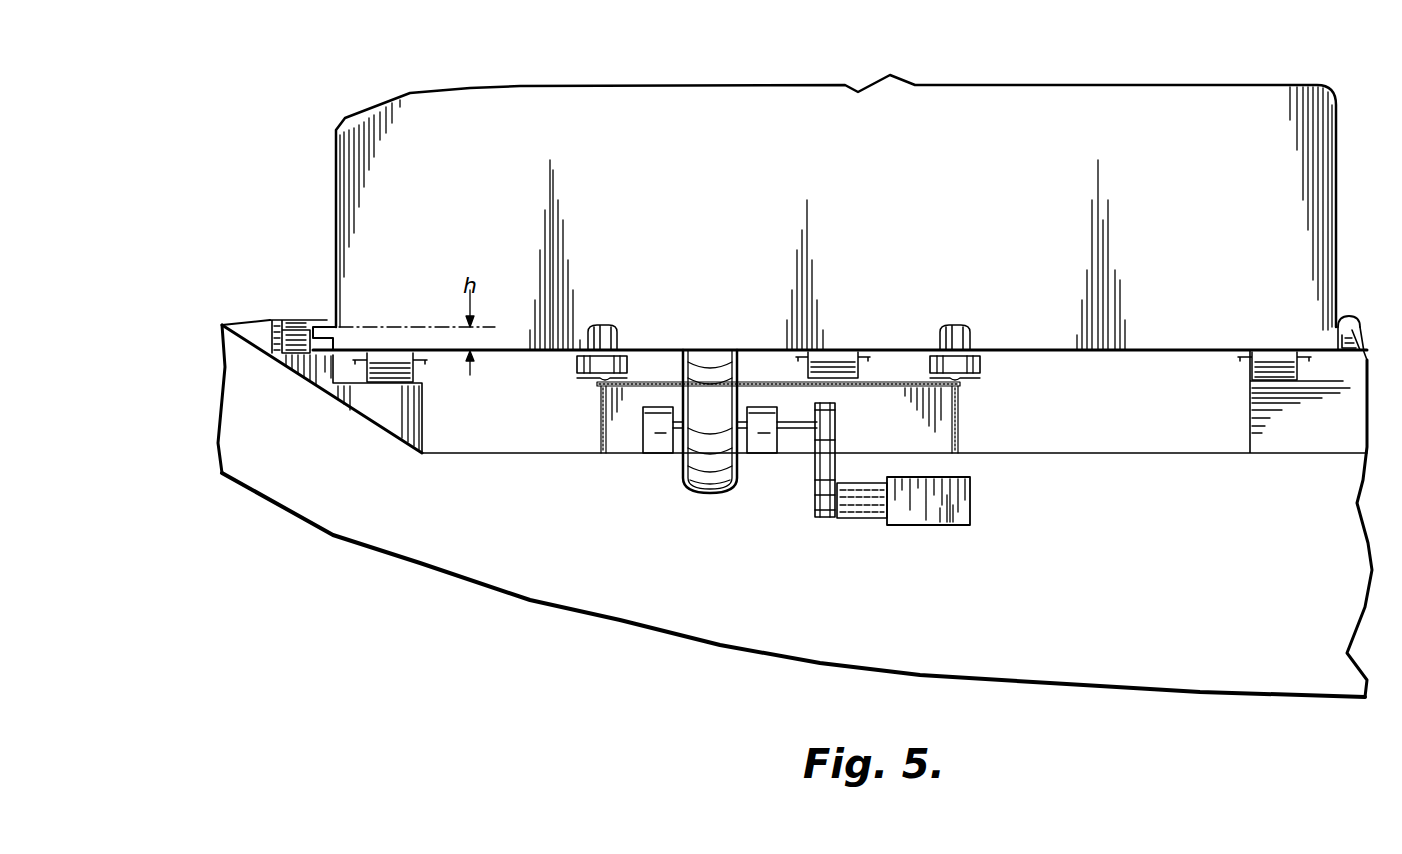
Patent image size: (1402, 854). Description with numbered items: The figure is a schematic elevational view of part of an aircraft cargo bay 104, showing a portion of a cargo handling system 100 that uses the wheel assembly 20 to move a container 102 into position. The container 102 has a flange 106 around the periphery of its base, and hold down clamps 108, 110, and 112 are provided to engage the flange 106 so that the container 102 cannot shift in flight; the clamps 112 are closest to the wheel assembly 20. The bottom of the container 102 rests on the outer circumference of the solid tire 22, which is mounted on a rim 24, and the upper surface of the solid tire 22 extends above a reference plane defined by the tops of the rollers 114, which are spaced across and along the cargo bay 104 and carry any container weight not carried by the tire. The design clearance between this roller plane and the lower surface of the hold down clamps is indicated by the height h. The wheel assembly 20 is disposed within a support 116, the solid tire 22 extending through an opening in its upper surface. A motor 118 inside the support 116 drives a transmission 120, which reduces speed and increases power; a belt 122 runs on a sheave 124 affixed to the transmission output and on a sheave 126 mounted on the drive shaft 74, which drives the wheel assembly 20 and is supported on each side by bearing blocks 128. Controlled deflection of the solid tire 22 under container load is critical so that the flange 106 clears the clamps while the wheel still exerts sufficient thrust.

The wheel assembly 20 is at (679, 453).
The solid tire 22 is at (679, 445).
The rim 24 is at (683, 470).
The drive shaft 74 is at (800, 428).
The cargo handling system 100 is at (582, 550).
The container 102 is at (812, 148).
The aircraft cargo bay 104 is at (283, 118).
The flange 106 is at (323, 345).
The hold down clamp 108 is at (322, 322).
The hold down clamp 110 is at (1352, 316).
The hold down clamp 112 is at (603, 325).
The rollers 114 is at (387, 357).
The support 116 is at (962, 433).
The motor 118 is at (937, 527).
The transmission 120 is at (858, 523).
The belt 122 is at (829, 464).
The sheave 124 is at (813, 510).
The upper pulley 126 is at (831, 461).
The bearing blocks 128 is at (647, 413).